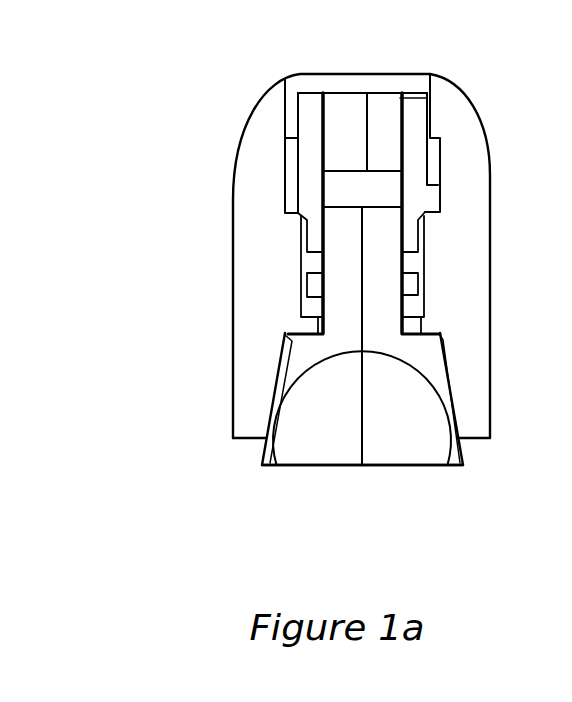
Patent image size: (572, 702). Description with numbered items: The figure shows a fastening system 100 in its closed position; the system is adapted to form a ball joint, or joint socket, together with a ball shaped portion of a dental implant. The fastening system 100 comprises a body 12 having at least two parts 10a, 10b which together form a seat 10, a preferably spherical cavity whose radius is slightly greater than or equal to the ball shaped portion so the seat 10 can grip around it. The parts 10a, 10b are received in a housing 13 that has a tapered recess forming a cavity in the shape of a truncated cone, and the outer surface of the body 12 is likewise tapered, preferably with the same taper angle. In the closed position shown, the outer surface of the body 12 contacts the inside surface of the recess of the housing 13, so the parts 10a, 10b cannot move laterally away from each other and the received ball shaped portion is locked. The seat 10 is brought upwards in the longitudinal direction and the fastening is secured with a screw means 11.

The fastening system 100 is at (230, 110).
The seat 10 is at (433, 406).
The part of the seat 10a is at (328, 453).
The part of the seat 10b is at (400, 440).
The screw means 11 is at (410, 200).
The body 12 is at (388, 290).
The housing 13 is at (233, 370).